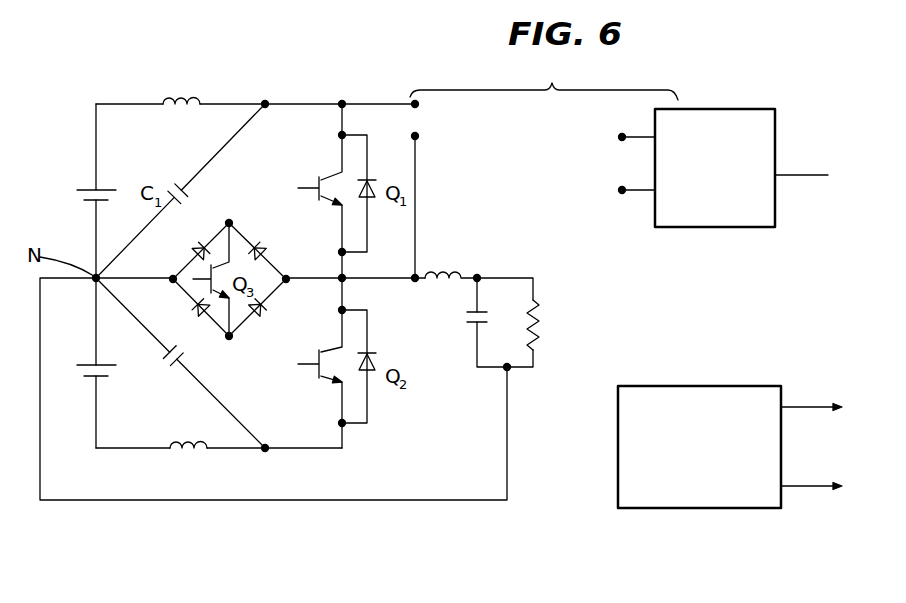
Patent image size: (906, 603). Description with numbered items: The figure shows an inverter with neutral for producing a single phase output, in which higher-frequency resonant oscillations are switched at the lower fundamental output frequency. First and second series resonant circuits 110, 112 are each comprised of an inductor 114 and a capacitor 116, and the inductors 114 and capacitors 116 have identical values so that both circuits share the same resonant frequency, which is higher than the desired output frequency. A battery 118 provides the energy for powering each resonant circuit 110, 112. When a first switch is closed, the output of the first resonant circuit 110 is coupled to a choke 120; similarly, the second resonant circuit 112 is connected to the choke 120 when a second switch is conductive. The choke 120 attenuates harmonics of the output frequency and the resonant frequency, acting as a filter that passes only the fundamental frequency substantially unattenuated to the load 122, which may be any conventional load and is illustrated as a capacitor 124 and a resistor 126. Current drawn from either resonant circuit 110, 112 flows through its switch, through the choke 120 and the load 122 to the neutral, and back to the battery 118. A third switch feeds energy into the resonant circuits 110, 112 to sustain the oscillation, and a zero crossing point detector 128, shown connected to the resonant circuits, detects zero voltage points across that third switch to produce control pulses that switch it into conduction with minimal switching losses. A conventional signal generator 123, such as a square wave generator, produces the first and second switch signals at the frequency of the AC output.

The first series resonant circuit 110 is at (128, 84).
The second series resonant circuit 112 is at (100, 466).
The inductor 114 is at (184, 100).
The capacitor 116 is at (181, 366).
The battery 118 is at (78, 191).
The choke 120 is at (438, 272).
The load 122 is at (546, 353).
The signal generator 123 is at (618, 458).
The capacitor 124 is at (467, 315).
The resistor 126 is at (540, 323).
The zero crossing point detector 128 is at (752, 228).